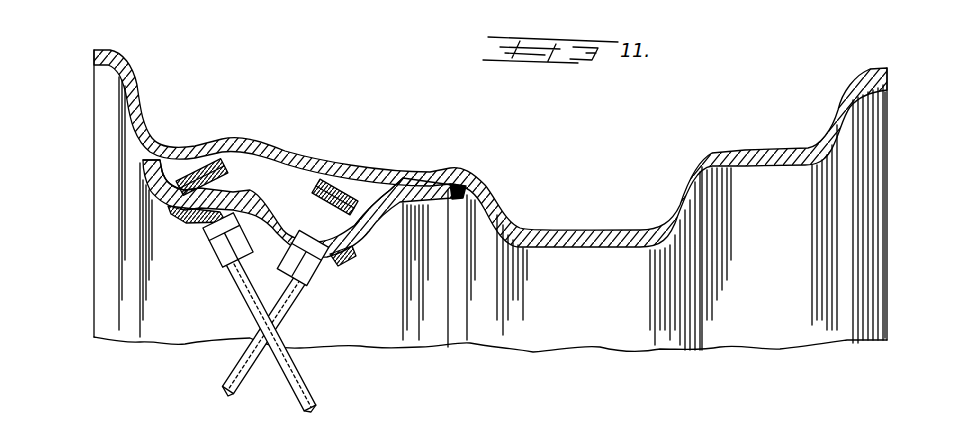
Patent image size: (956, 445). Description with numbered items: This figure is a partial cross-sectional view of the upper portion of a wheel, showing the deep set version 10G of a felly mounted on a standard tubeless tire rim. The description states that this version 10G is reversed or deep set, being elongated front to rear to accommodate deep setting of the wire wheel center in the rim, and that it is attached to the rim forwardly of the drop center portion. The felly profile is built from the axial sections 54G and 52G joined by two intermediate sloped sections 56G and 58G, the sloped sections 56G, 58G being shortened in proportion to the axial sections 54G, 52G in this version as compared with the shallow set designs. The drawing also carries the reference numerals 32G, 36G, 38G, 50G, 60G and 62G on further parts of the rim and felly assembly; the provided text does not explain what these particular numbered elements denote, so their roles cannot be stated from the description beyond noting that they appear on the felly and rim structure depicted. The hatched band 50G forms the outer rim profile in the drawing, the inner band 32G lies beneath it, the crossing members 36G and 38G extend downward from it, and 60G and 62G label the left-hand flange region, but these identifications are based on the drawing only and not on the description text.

The deep set version 10G is at (237, 101).
The bead seat band 32G is at (279, 192).
The first bolt 36G is at (237, 368).
The second bolt 38G is at (296, 382).
The rim base 50G is at (425, 166).
The axial section 52G is at (196, 203).
The axial section 54G is at (336, 264).
The intermediate sloped section 56G is at (393, 178).
The intermediate sloped section 58G is at (310, 208).
The flange ring 60G is at (143, 163).
The shaded surface 62G is at (180, 217).